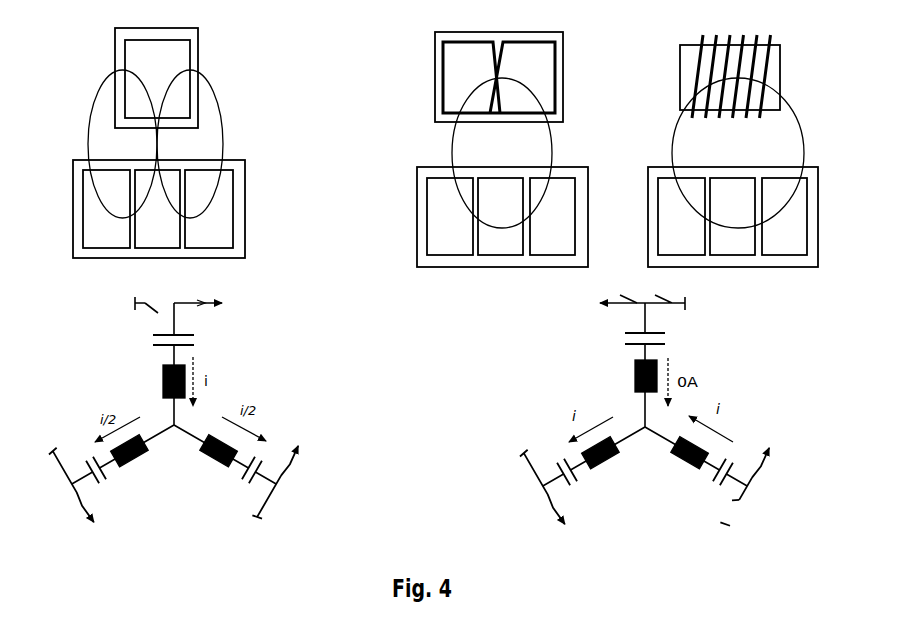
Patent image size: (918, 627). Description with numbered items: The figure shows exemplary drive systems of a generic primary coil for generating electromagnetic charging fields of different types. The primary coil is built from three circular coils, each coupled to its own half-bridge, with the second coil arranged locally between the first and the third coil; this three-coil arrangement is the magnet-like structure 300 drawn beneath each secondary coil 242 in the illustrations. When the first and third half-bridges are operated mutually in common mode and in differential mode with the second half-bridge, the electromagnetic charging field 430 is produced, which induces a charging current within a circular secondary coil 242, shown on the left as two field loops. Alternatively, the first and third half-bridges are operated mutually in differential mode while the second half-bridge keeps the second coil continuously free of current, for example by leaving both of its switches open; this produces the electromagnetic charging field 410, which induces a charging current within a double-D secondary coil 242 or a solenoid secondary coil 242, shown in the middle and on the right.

The secondary coil 242 is at (200, 48).
The magnet array 300 is at (245, 195).
The electromagnetic charging field 430 is at (89, 275).
The electromagnetic charging field 410 is at (498, 285).